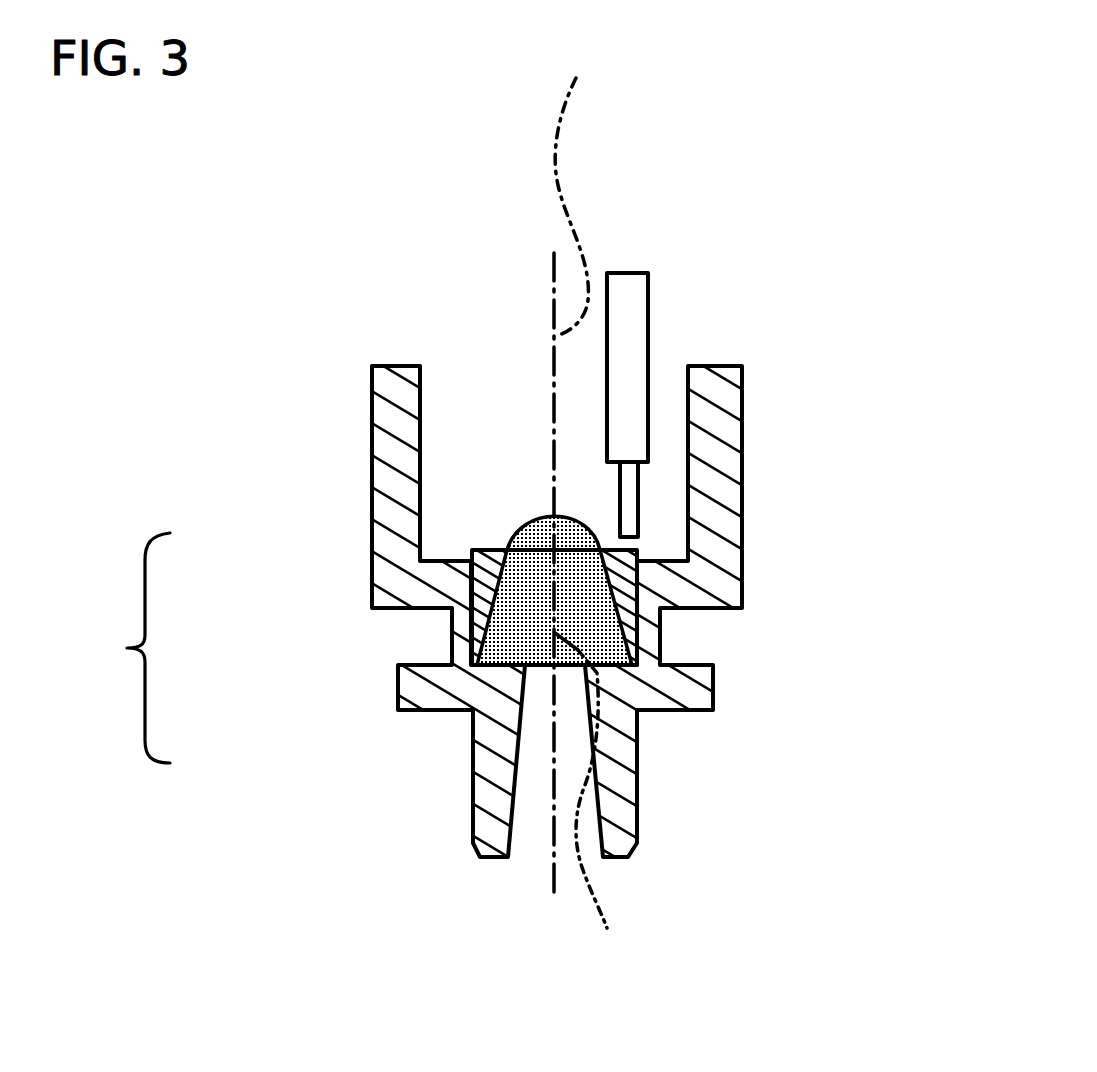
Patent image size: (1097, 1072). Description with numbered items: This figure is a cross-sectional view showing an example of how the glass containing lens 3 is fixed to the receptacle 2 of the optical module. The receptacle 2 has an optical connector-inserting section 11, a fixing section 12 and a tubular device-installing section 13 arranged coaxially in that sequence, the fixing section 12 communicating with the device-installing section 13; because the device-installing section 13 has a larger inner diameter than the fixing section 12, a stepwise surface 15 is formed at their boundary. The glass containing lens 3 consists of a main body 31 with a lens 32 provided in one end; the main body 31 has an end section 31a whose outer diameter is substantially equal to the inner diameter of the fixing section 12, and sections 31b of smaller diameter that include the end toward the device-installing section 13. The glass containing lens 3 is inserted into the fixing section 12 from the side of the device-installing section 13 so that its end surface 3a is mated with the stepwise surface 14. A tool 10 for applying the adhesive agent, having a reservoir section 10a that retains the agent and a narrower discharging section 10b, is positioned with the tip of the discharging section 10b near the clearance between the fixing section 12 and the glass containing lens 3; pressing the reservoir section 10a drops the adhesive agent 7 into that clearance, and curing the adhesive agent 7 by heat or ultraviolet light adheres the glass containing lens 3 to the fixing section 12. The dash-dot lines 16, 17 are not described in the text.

The receptacle 2 is at (725, 507).
The glass containing lens 3 is at (637, 587).
The end surface 3a is at (503, 665).
The adhesive agent 7 is at (477, 542).
The tool for applying the adhesive agent 10 is at (623, 273).
The reservoir section 10a is at (645, 316).
The discharging section 10b is at (633, 487).
The optical connector-inserting section 11 is at (512, 700).
The fixing section 12 is at (628, 621).
The device-installing section 13 is at (423, 420).
The stepwise surface 14 is at (612, 665).
The stepwise surface 15 is at (658, 560).
The upward light ray 16 is at (578, 186).
The downward light ray 17 is at (598, 802).
The main body 31 is at (121, 648).
The end section 31a is at (475, 655).
The sections except the end section 31b is at (473, 592).
The lens 32 is at (540, 523).